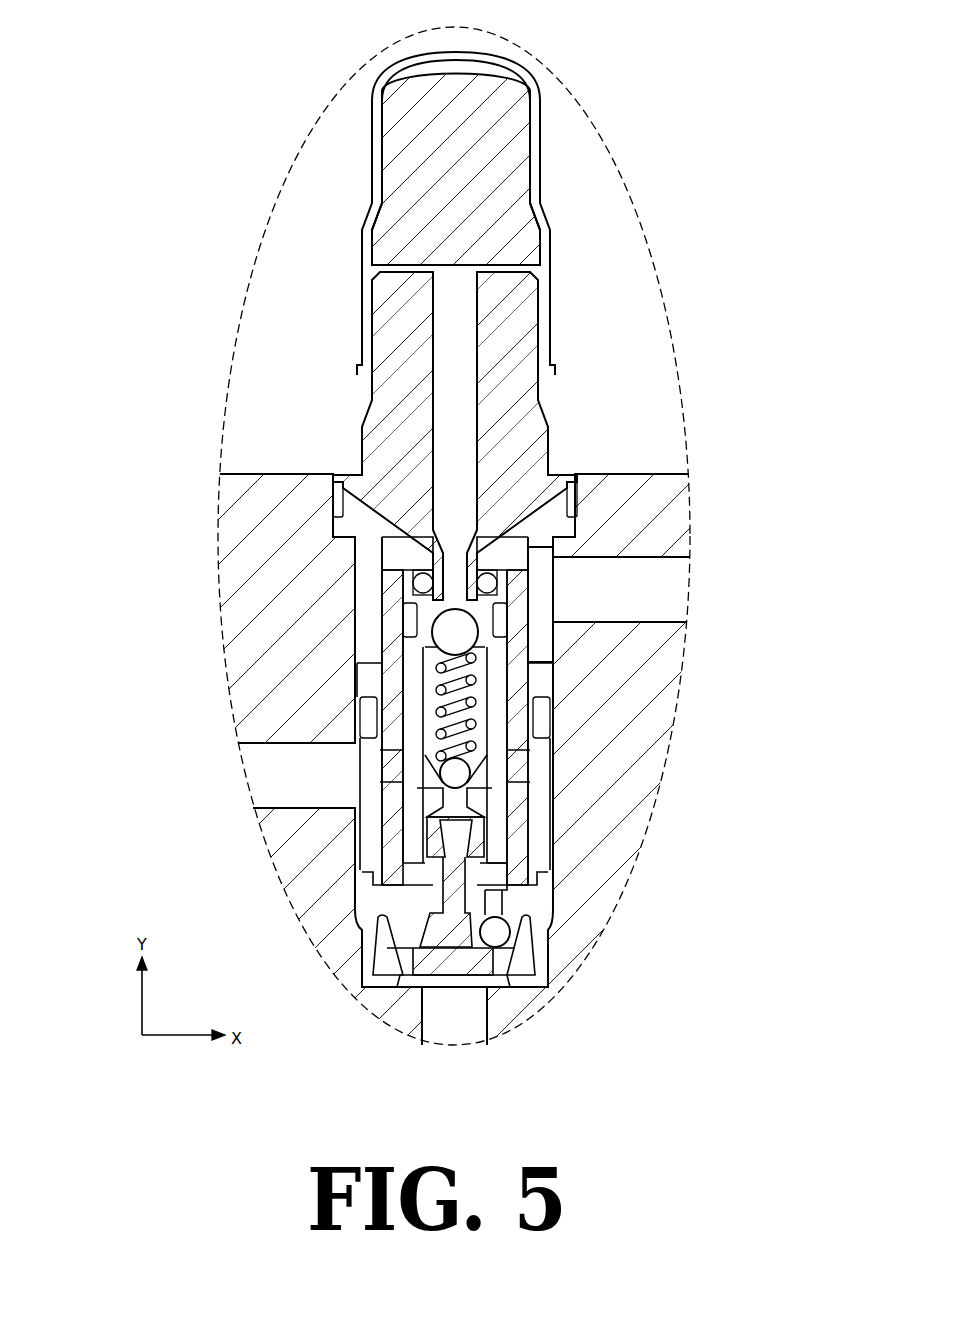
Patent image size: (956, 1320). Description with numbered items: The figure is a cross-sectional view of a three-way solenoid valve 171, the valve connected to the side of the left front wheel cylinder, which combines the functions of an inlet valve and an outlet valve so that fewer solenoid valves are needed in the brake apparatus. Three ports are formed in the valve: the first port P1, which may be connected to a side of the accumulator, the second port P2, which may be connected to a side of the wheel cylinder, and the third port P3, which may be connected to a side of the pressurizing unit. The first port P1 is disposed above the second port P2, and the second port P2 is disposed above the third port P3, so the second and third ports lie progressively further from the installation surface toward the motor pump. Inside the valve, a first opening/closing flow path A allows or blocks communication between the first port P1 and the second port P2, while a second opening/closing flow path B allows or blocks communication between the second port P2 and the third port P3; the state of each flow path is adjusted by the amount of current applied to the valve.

The left front wheel 3-way solenoid valve 171 is at (236, 31).
The first opening/closing flow path A is at (343, 487).
The second opening/closing flow path B is at (473, 781).
The first port P1 is at (553, 549).
The second port P2 is at (388, 768).
The third port P3 is at (477, 1038).